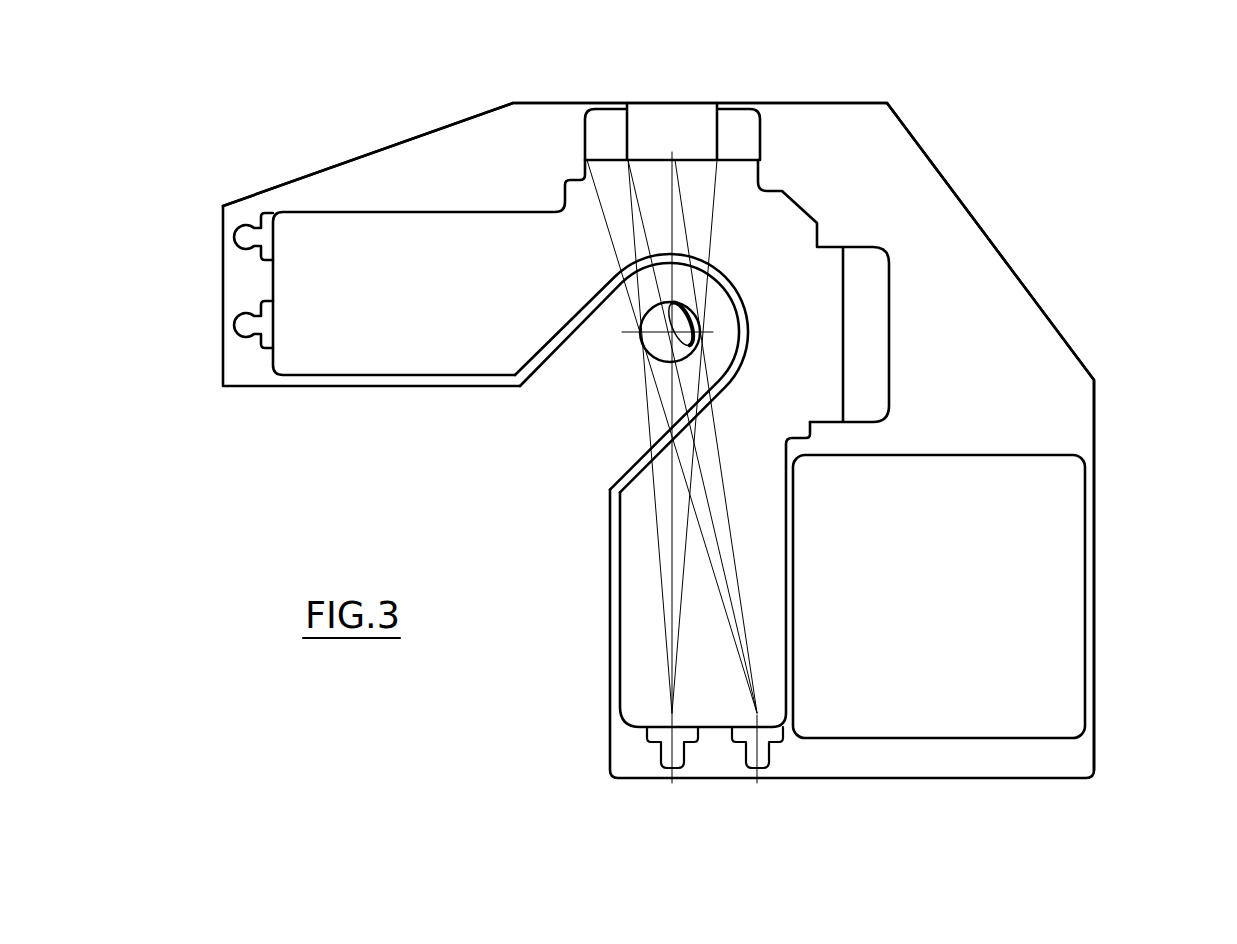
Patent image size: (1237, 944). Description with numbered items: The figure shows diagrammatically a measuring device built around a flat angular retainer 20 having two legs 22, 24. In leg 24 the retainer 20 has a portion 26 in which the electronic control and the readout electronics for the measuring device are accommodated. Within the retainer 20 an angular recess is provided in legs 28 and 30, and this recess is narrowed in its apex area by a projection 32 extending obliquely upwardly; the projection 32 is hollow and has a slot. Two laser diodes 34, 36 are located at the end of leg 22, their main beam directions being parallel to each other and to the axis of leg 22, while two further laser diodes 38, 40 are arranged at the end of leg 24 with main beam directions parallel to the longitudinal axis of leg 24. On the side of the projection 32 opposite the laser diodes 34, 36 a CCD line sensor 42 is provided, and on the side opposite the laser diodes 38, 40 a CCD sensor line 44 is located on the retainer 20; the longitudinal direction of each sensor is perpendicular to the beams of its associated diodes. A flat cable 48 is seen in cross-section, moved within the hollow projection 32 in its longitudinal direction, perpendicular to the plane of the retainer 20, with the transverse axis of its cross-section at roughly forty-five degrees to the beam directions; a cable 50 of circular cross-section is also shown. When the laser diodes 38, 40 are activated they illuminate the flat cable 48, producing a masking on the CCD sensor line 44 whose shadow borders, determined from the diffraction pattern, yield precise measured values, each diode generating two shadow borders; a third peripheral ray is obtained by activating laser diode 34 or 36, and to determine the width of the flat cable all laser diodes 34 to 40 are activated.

The flat angular retainer 20 is at (1035, 266).
The leg 22 is at (395, 141).
The leg 24 is at (1097, 478).
The portion 26 is at (964, 619).
The leg of angular recess 28 is at (441, 315).
The leg of angular recess 30 is at (778, 509).
The projection 32 is at (585, 310).
The laser diode 34 is at (245, 232).
The laser diode 36 is at (253, 328).
The laser diode 38 is at (665, 756).
The laser diode 40 is at (762, 758).
The CCD line sensor 42 is at (855, 272).
The CCD sensor line 44 is at (693, 160).
The flat cable 48 is at (698, 330).
The cable 50 is at (653, 345).